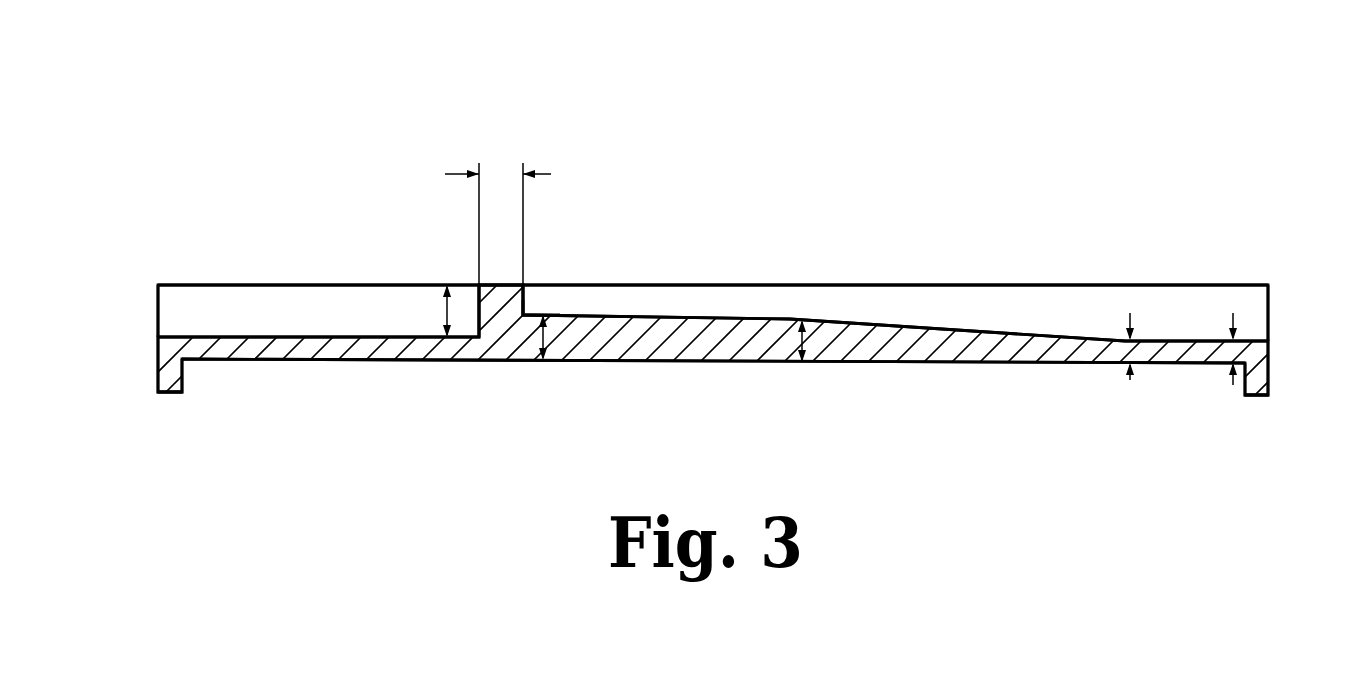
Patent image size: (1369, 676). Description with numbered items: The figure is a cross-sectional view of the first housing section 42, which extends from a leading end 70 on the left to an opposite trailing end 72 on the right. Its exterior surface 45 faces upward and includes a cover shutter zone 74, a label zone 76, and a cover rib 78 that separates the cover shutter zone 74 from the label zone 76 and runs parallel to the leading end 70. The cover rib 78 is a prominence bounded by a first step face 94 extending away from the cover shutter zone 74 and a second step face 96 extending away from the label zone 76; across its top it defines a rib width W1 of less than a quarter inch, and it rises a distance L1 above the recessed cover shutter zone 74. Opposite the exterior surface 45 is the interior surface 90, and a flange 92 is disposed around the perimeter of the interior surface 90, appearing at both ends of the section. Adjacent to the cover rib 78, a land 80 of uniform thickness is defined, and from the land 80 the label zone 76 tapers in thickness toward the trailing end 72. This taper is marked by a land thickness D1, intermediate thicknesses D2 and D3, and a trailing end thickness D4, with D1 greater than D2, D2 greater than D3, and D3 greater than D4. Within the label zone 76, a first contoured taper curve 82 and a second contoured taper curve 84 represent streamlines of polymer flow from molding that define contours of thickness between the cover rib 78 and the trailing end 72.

The first housing section 42 is at (276, 97).
The exterior surface 45 is at (1213, 285).
The leading end 70 is at (157, 347).
The trailing end 72 is at (1268, 363).
The cover shutter zone 74 is at (270, 337).
The label zone 76 is at (950, 330).
The cover rib 78 is at (503, 298).
The land 80 is at (530, 314).
The first contoured taper curve 82 is at (801, 318).
The second contoured taper curve 84 is at (1120, 340).
The interior surface 90 is at (335, 360).
The flange 92 is at (165, 393).
The first step face 94 is at (478, 312).
The second step face 96 is at (527, 306).
The rib width W1 is at (460, 174).
The rib extension distance L1 is at (445, 305).
The land thickness D1 is at (543, 357).
The intermediate thickness D2 is at (803, 362).
The intermediate thickness D3 is at (1130, 380).
The trailing end thickness D4 is at (1233, 385).